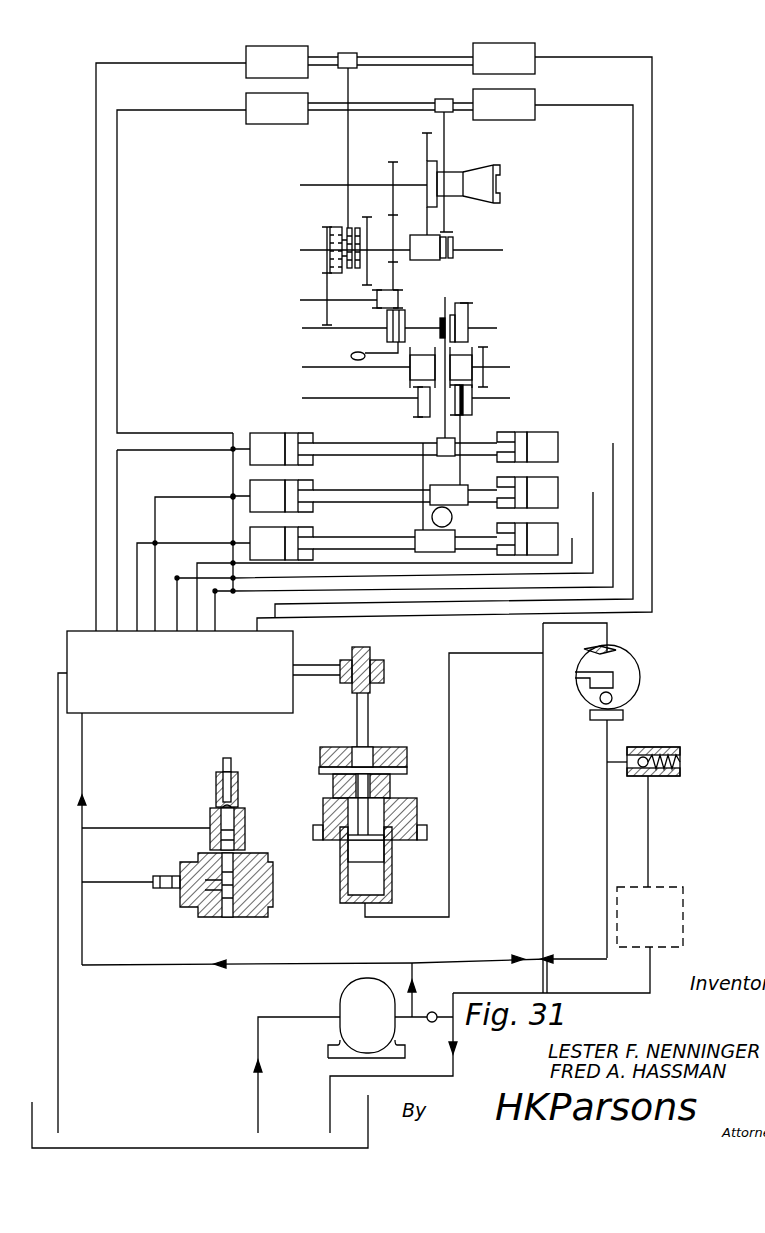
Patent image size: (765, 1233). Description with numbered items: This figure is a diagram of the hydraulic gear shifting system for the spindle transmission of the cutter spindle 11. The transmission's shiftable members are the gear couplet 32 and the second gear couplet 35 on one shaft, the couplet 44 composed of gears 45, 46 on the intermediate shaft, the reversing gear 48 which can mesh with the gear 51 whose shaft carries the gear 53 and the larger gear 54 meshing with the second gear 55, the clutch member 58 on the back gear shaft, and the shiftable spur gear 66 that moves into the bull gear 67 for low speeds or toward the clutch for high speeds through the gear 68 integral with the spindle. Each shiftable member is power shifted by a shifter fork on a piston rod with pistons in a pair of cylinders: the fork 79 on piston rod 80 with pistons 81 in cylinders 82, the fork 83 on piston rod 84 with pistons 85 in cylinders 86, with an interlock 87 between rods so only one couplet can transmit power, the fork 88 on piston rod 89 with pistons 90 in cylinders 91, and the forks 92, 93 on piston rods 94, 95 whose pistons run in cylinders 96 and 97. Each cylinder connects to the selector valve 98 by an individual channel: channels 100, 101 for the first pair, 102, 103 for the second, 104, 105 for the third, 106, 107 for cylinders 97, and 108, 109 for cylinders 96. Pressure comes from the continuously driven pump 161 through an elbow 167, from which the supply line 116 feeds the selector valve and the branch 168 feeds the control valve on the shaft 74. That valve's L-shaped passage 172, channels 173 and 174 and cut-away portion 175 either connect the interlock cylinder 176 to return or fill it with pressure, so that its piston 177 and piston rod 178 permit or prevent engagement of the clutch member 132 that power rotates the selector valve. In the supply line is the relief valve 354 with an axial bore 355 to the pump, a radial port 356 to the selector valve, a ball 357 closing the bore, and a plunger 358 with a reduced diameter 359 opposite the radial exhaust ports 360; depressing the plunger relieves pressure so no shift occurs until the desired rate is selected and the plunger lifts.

The cutter spindle 11 is at (452, 178).
The gear couplet 32 is at (418, 405).
The second gear couplet 35 is at (490, 400).
The shiftable couplet 44 is at (440, 322).
The gear 45 is at (455, 315).
The gear 46 is at (470, 306).
The reversing gear 48 is at (378, 340).
The gear 51 is at (378, 308).
The gear 53 is at (398, 290).
The gear 54 is at (327, 288).
The second gear 55 is at (327, 225).
The clutch member 58 is at (345, 232).
The shiftable spur gear 66 is at (412, 262).
The bull gear 67 is at (427, 136).
The gear 68 is at (393, 162).
The shaft of the spindle clutch starting lever 74 is at (634, 683).
The shifter fork 79 is at (423, 468).
The piston rod 80 is at (358, 537).
The piston 81 is at (300, 551).
The cylinder 82 is at (250, 532).
The shifter fork 83 is at (462, 432).
The piston rod 84 is at (372, 490).
The piston 85 is at (300, 484).
The cylinder 86 is at (250, 486).
The interlock 87 is at (452, 517).
The shifter fork 88 is at (445, 418).
The piston rod 89 is at (352, 443).
The piston 90 is at (290, 433).
The cylinder 91 is at (268, 433).
The shifter fork 92 is at (348, 144).
The shifter fork 93 is at (445, 150).
The piston rod 94 is at (400, 60).
The piston rod 95 is at (392, 104).
The cylinder 96 is at (258, 46).
The cylinder 97 is at (265, 122).
The selector valve 98 is at (253, 710).
The channel 100 is at (168, 543).
The channel 101 is at (197, 566).
The channel 102 is at (157, 524).
The channel 103 is at (177, 578).
The channel 104 is at (120, 505).
The channel 105 is at (285, 593).
The channel 106 is at (117, 420).
The channel 107 is at (633, 366).
The channel 108 is at (96, 360).
The channel 109 is at (652, 378).
The selector valve supply line 116 is at (306, 963).
The clutch member 132 is at (408, 747).
The pump 161 is at (340, 998).
The elbow 167 is at (412, 962).
The branch 168 is at (478, 958).
The L-shaped passage 172 is at (584, 684).
The channel 173 is at (450, 825).
The channel 174 is at (547, 832).
The cut-away portion 175 is at (614, 652).
The small cylinder 176 is at (392, 886).
The piston 177 is at (348, 860).
The piston rod 178 is at (370, 808).
The relief valve 354 is at (246, 820).
The axial bore 355 is at (245, 853).
The radial port 356 is at (208, 828).
The ball 357 is at (240, 806).
The plunger 358 is at (232, 768).
The reduced diameter 359 is at (240, 790).
The radial exhaust ports 360 is at (216, 800).